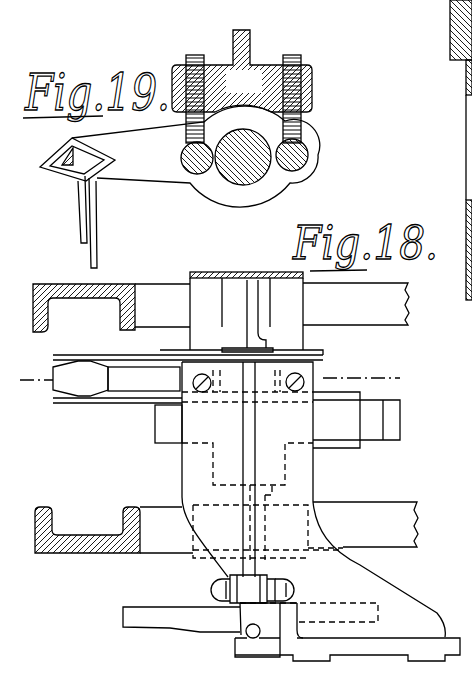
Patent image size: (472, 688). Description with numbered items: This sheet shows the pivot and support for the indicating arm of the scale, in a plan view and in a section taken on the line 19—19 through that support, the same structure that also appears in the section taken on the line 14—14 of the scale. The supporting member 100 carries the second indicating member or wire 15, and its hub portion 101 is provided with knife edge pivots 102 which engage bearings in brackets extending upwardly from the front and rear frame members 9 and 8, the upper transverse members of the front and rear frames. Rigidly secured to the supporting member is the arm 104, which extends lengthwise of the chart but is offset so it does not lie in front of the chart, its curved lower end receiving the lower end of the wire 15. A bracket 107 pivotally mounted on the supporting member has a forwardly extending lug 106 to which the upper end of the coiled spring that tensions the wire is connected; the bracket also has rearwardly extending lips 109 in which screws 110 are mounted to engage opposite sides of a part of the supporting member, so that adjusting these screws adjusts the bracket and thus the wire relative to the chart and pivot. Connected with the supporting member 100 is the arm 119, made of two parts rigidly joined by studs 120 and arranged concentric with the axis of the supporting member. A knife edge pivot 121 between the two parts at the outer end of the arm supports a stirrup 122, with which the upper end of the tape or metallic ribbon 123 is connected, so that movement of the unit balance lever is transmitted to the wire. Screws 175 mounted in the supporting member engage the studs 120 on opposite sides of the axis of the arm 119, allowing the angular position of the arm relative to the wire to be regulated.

In FIG. 18, the upper transverse member 8 is at (98, 299).
In FIG. 18, the upper transverse member 9 is at (226, 527).
In FIG. 18, the mounting plate 14 is at (170, 620).
In FIG. 18, the indicating wire 15 is at (250, 640).
In FIG. 18, the section line 19- 19 is at (222, 381).
In FIG. 19, the supporting member 100 is at (242, 71).
In FIG. 18, the supporting member 100 is at (313, 499).
In FIG. 18, the hub portion 101 is at (277, 352).
In FIG. 19, the knife edge pivot 102 is at (247, 150).
In FIG. 18, the knife edge pivot 102 is at (246, 333).
In FIG. 18, the arm 104 is at (401, 646).
In FIG. 18, the forwardly extending lug 106 is at (277, 622).
In FIG. 18, the bracket 107 is at (243, 578).
In FIG. 18, the rearwardly extending lip 109 is at (270, 584).
In FIG. 18, the screw 110 is at (292, 588).
In FIG. 19, the arm 119 is at (196, 156).
In FIG. 18, the arm 119 is at (133, 403).
In FIG. 19, the stud 120 is at (318, 156).
In FIG. 19, the knife edge pivot 121 is at (77, 159).
In FIG. 19, the stirrup 122 is at (88, 184).
In FIG. 18, the stirrup 122 is at (80, 378).
In FIG. 19, the tape 123 is at (96, 258).
In FIG. 18, the tape 123 is at (144, 380).
In FIG. 19, the screw 175 is at (197, 58).
In FIG. 18, the screw 175 is at (201, 392).